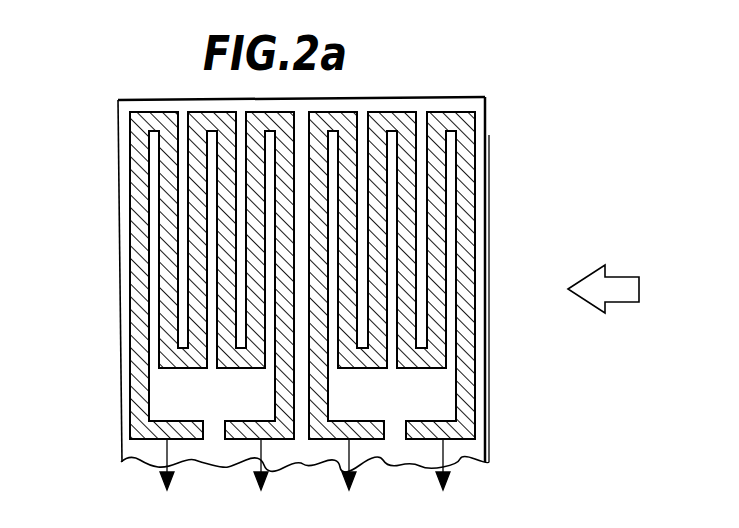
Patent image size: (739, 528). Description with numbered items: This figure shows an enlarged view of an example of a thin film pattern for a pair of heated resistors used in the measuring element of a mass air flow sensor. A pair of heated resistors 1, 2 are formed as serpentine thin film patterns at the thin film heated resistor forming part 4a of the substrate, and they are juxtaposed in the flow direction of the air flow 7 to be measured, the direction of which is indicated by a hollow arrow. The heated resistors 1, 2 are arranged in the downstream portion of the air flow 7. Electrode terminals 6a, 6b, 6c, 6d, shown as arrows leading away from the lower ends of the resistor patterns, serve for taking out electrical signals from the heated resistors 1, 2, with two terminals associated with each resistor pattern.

The heated resistor 1 is at (447, 172).
The heated resistor 2 is at (151, 180).
The thin film heated resistor forming part 4a is at (453, 398).
The electrode terminal 6a is at (168, 481).
The electrode terminal 6b is at (263, 481).
The electrode terminal 6c is at (350, 480).
The electrode terminal 6d is at (443, 479).
The air flow 7 is at (612, 278).